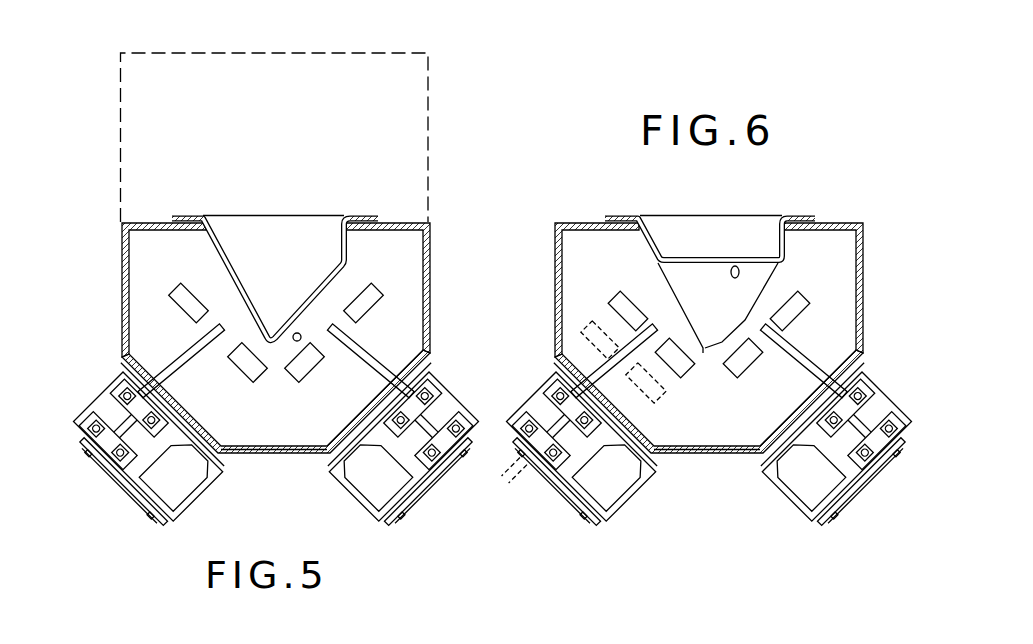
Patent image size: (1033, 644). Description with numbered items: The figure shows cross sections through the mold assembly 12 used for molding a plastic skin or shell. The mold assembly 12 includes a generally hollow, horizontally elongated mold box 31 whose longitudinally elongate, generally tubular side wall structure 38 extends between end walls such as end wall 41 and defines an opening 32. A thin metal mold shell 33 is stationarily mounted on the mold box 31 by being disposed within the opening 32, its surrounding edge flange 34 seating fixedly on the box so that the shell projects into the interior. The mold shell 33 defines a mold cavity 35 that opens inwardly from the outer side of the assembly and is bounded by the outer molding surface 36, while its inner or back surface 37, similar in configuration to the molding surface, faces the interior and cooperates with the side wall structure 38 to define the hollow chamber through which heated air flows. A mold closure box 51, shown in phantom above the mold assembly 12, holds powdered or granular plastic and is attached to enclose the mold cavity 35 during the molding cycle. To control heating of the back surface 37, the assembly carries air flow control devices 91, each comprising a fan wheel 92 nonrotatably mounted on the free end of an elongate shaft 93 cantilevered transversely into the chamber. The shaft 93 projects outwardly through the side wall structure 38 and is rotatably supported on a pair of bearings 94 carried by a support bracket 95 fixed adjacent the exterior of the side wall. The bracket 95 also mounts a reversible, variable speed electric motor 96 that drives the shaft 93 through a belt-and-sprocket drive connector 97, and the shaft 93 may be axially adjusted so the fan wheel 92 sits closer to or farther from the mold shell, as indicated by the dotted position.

In FIG. 5, the mold assembly 12 is at (457, 95).
In FIG. 5, the mold closure box 51 is at (403, 50).
In FIG. 5, the mold box 31 is at (330, 470).
In FIG. 6, the mold box 31 is at (709, 454).
In FIG. 5, the opening 32 is at (203, 238).
In FIG. 5, the mold shell 33 is at (230, 237).
In FIG. 6, the mold shell 33 is at (718, 343).
In FIG. 5, the edge flange 34 is at (188, 214).
In FIG. 6, the edge flange 34 is at (819, 189).
In FIG. 5, the mold cavity 35 is at (290, 240).
In FIG. 6, the mold cavity 35 is at (637, 189).
In FIG. 5, the outer molding surface 36 is at (340, 236).
In FIG. 6, the outer molding surface 36 is at (710, 209).
In FIG. 5, the back surface 37 is at (297, 333).
In FIG. 6, the back surface 37 is at (753, 288).
In FIG. 5, the side wall structure 38 is at (302, 418).
In FIG. 6, the side wall structure 38 is at (734, 270).
In FIG. 5, the end wall 41 is at (317, 460).
In FIG. 6, the end wall 41 is at (707, 488).
In FIG. 5, the air flow control device 91 is at (78, 391).
In FIG. 6, the air flow control device 91 is at (691, 457).
In FIG. 5, the fan wheel 92 is at (172, 297).
In FIG. 6, the fan wheel 92 is at (709, 318).
In FIG. 5, the shaft 93 is at (200, 345).
In FIG. 6, the shaft 93 is at (709, 361).
In FIG. 5, the bearings 94 is at (122, 384).
In FIG. 5, the support bracket 95 is at (100, 412).
In FIG. 5, the electric motor 96 is at (180, 492).
In FIG. 5, the drive connector 97 is at (120, 494).